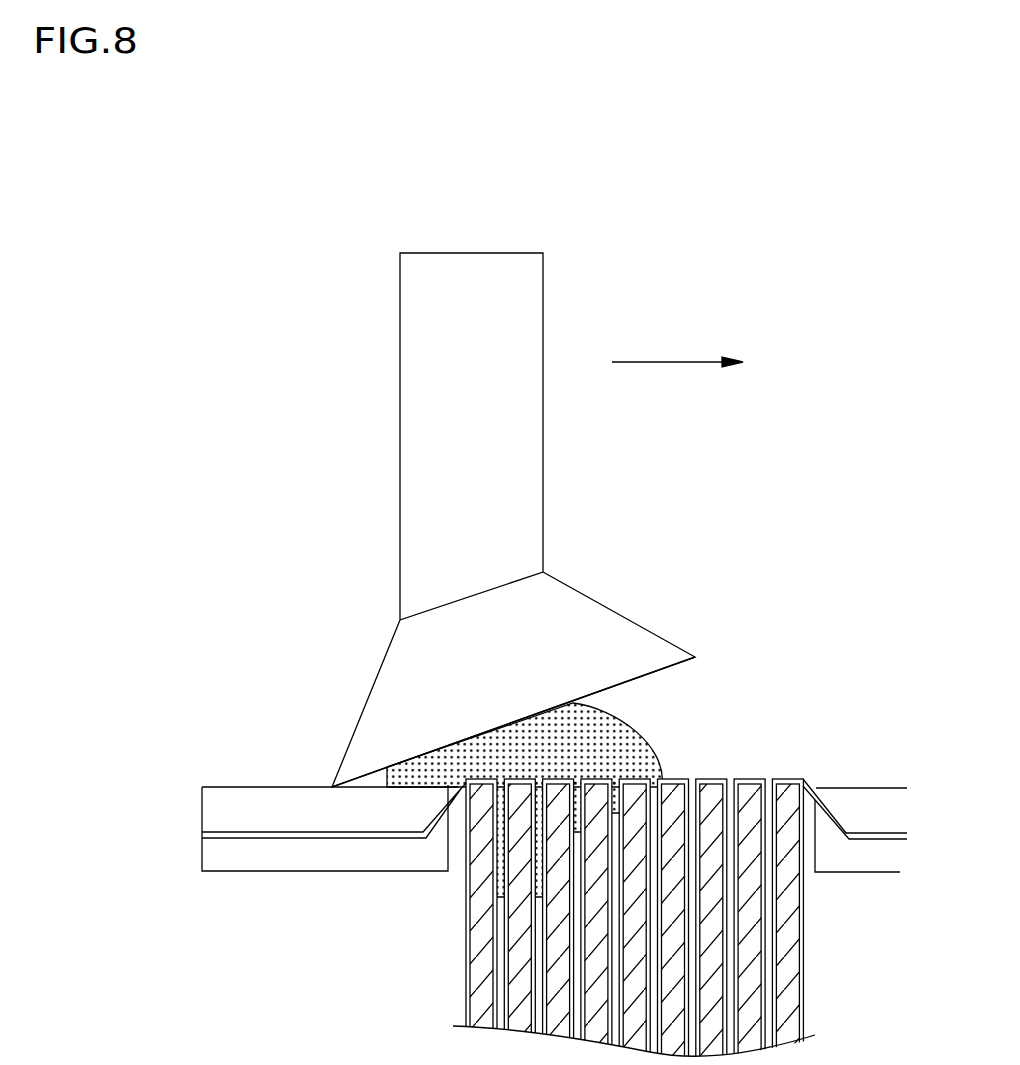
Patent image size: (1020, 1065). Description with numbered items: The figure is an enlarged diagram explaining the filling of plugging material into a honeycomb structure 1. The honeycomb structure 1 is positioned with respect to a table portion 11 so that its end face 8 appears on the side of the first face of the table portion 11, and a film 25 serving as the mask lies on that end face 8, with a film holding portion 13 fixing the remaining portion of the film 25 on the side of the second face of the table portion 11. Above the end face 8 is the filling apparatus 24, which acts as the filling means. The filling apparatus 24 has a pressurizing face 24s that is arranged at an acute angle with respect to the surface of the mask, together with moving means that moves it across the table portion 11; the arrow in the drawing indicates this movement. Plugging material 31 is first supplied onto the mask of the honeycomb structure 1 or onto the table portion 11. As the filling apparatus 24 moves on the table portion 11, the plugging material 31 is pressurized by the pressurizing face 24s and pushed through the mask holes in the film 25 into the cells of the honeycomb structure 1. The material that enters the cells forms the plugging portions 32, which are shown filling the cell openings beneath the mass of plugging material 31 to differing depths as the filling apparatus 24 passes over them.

The honeycomb structure 1 is at (810, 974).
The end face 8 is at (634, 924).
The table portion 11 is at (270, 797).
The film holding portion 13 is at (297, 860).
The filling apparatus 24 is at (523, 510).
The pressurizing face 24s is at (665, 672).
The film 25 is at (634, 922).
The plugging material 31 is at (597, 713).
The plugging portion 32 is at (466, 898).